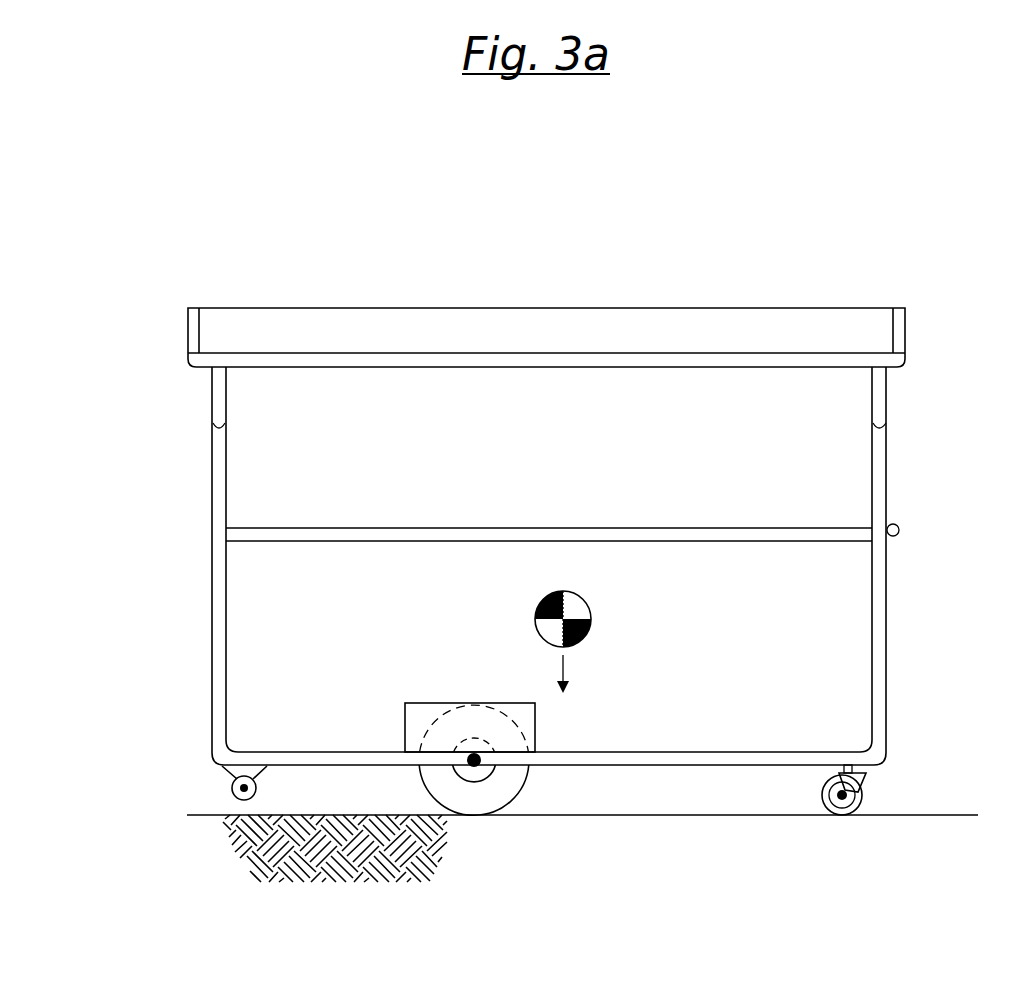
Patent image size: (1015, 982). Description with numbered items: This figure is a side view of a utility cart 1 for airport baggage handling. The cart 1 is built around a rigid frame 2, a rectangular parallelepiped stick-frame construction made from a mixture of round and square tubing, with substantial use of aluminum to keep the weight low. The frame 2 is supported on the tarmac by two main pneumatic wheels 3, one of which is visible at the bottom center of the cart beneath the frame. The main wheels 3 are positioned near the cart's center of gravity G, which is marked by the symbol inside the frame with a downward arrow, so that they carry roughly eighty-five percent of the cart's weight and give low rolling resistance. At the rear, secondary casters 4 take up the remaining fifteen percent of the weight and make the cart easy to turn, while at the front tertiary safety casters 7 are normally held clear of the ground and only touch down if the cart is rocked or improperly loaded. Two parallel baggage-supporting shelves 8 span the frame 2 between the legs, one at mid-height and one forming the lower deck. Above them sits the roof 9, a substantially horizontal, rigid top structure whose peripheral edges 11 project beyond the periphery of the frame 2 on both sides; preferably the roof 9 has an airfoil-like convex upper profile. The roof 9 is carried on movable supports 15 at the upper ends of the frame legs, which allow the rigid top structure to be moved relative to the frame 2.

The utility cart 1 is at (1014, 275).
The rigid frame 2 is at (212, 583).
The main pneumatic wheels 3 is at (485, 795).
The secondary casters 4 is at (850, 809).
The tertiary safety casters 7 is at (232, 790).
The baggage-supporting shelves 8 is at (705, 528).
The roof 9 is at (522, 318).
The peripheral edges 11 is at (192, 335).
The movable supports 15 is at (205, 373).
The center of gravity G is at (582, 612).